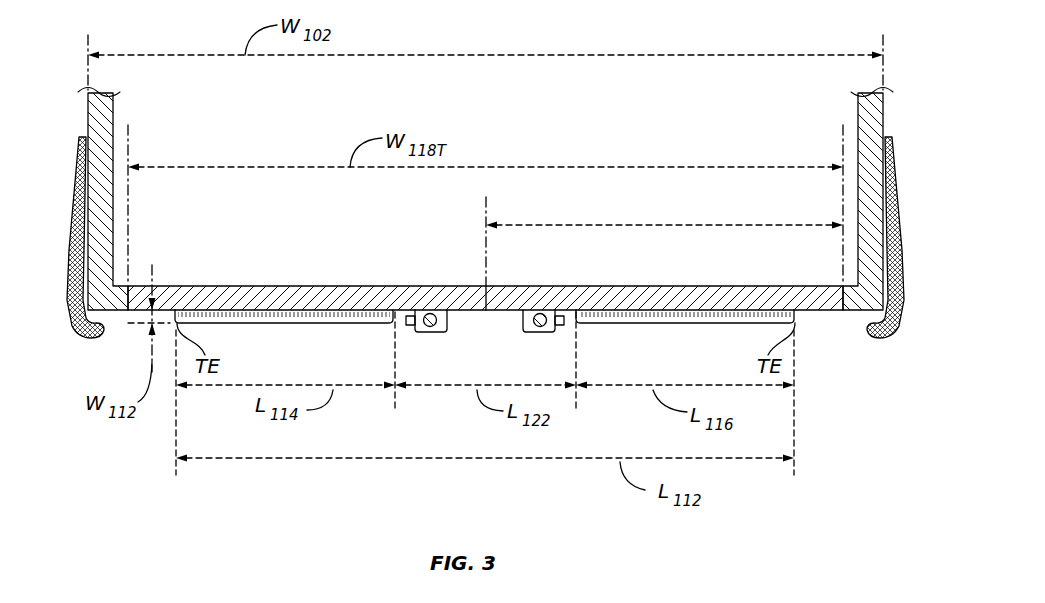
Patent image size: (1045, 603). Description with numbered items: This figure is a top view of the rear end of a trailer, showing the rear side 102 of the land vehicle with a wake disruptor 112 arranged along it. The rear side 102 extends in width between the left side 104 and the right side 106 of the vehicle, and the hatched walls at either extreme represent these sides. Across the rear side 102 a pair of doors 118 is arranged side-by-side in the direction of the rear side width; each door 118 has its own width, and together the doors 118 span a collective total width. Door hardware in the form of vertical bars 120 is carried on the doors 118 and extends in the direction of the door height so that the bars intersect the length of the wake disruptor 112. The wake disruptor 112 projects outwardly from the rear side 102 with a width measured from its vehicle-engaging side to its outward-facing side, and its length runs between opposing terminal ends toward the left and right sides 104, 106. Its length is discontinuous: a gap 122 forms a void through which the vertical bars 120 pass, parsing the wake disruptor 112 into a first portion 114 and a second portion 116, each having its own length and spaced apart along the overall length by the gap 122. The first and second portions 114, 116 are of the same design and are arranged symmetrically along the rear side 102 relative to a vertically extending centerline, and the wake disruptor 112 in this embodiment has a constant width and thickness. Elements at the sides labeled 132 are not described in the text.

The rear side 102 is at (487, 211).
The left side 104 is at (88, 107).
The right side 106 is at (883, 107).
The wake disruptor 112 is at (547, 388).
The first portion 114 is at (284, 323).
The second portion 116 is at (662, 323).
The doors 118 is at (263, 285).
The vertical bars 120 is at (430, 314).
The gap 122 is at (464, 336).
The gasket 132 is at (67, 258).